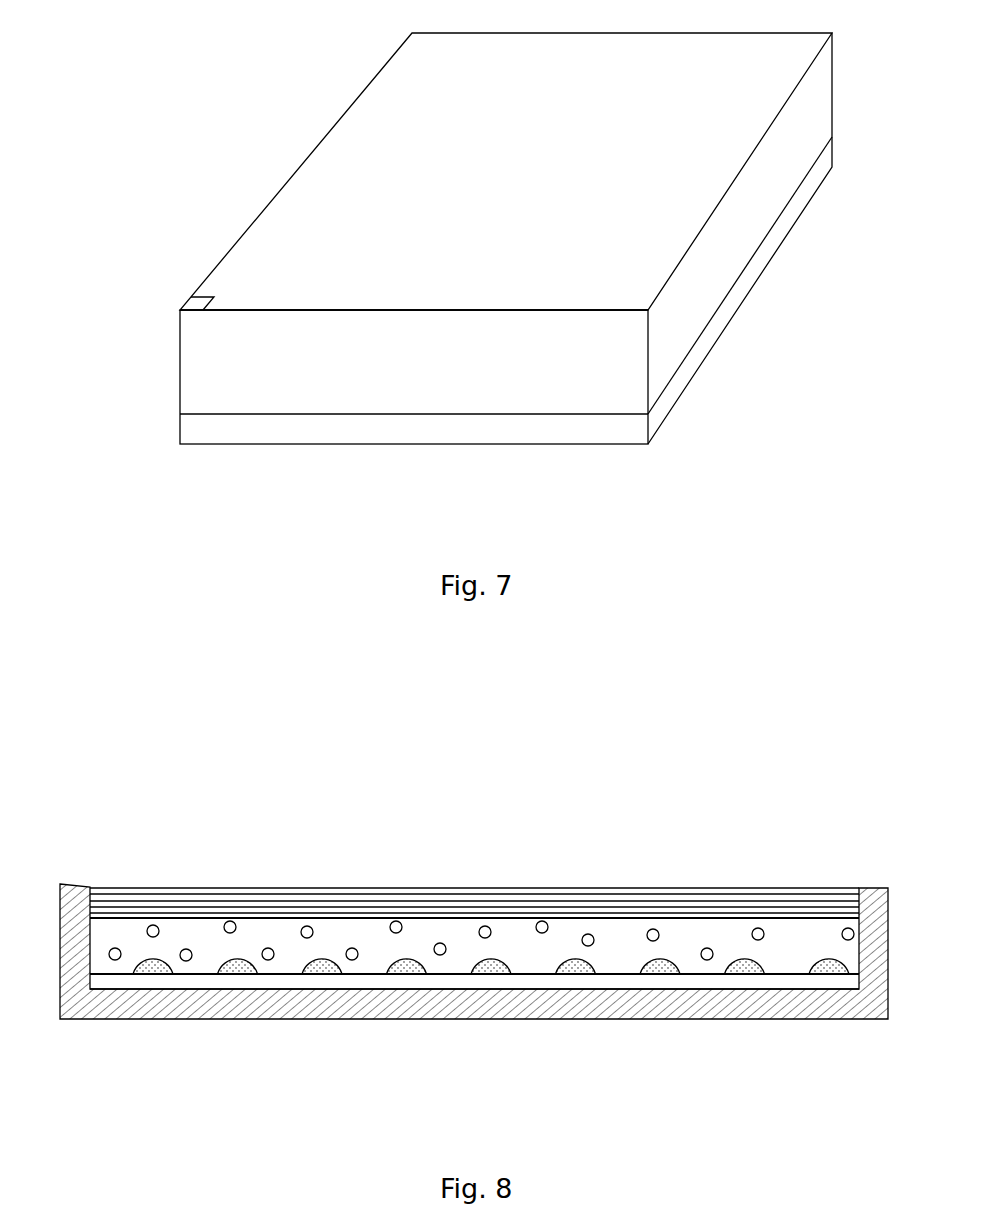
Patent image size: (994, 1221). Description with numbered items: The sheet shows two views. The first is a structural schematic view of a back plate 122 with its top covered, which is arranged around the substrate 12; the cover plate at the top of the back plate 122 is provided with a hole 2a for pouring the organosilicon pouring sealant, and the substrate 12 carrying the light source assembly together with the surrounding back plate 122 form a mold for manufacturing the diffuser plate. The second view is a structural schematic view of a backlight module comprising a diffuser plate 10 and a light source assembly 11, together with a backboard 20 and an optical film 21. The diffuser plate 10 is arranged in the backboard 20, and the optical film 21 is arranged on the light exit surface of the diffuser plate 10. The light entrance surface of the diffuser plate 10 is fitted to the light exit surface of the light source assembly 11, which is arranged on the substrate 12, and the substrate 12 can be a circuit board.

In FIG. 7, the hole 2a is at (183, 303).
In FIG. 7, the substrate 12 is at (506, 272).
In FIG. 8, the substrate 12 is at (447, 976).
In FIG. 7, the back plate 122 is at (414, 410).
In FIG. 8, the diffuser plate 10 is at (542, 954).
In FIG. 8, the light source assembly 11 is at (497, 968).
In FIG. 8, the backboard 20 is at (267, 1022).
In FIG. 8, the optical film 21 is at (474, 858).